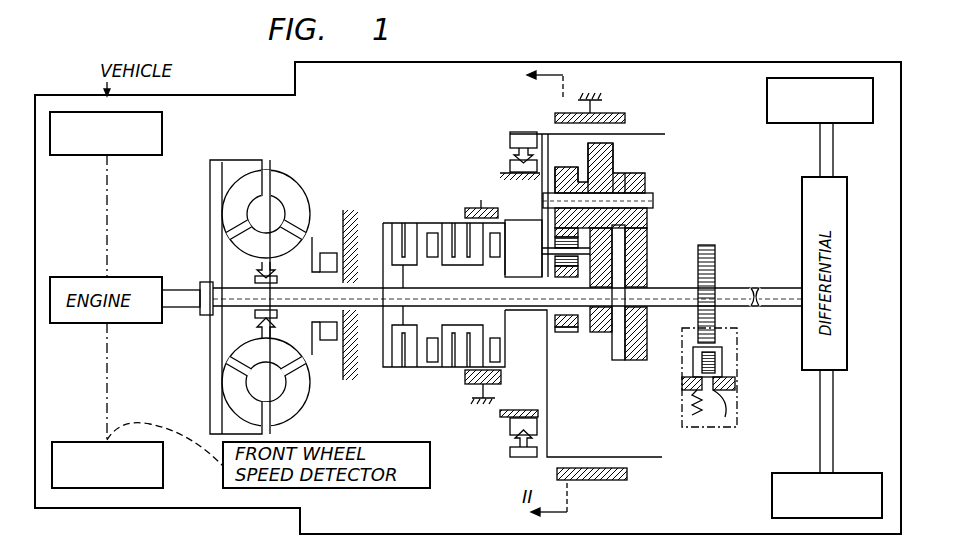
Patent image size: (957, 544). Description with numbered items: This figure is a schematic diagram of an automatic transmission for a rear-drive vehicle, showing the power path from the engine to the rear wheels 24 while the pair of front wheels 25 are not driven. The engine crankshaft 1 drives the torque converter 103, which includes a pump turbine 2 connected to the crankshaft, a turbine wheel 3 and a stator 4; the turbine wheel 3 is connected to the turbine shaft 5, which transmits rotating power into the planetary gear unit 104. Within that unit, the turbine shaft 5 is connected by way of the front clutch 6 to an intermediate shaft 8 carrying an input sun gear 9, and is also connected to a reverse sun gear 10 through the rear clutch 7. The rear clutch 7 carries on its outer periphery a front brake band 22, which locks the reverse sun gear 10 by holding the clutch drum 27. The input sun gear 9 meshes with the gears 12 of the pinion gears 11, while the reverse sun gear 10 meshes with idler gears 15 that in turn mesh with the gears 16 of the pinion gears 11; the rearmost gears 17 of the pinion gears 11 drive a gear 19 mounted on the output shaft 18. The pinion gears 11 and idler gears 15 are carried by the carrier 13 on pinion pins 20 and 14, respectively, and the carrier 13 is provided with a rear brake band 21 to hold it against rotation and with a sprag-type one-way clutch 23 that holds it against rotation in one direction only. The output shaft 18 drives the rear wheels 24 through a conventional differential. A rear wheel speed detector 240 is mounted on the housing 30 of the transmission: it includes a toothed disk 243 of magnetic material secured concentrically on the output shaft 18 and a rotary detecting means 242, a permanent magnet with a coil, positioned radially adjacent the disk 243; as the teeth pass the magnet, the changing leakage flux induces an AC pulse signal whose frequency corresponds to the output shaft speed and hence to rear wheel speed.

The engine crankshaft 1 is at (188, 302).
The pump turbine 2 is at (300, 190).
The turbine wheel 3 is at (232, 205).
The stator 4 is at (249, 250).
The turbine shaft 5 is at (368, 307).
The front clutch 6 is at (411, 360).
The rear clutch 7 is at (456, 351).
The intermediate shaft 8 is at (531, 298).
The input sun gear 9 is at (603, 326).
The reverse sun gear 10 is at (570, 332).
The pinion gears 11 is at (622, 168).
The gears of the pinion gears 12 is at (613, 150).
The carrier 13 is at (542, 190).
The pinion pins 14 is at (542, 247).
The idler gears 15 is at (542, 263).
The gears of the pinion gears 16 is at (578, 167).
The rearmost gears 17 is at (647, 186).
The output shaft 18 is at (738, 290).
The gear 19 is at (647, 252).
The pinion pins 20 is at (653, 205).
The rear brake band 21 is at (623, 113).
The front brake band 22 is at (471, 208).
The one-way clutch 23 is at (507, 158).
The rear wheels 24 is at (767, 100).
The front wheels 25 is at (163, 128).
The clutch drum 27 is at (500, 378).
The housing 30 is at (735, 386).
The torque converter 103 is at (382, 140).
The planetary gear unit 104 is at (500, 107).
The rear wheel speed detector 240 is at (744, 414).
The rotary detecting means 242 is at (700, 360).
The toothed disk 243 is at (716, 312).